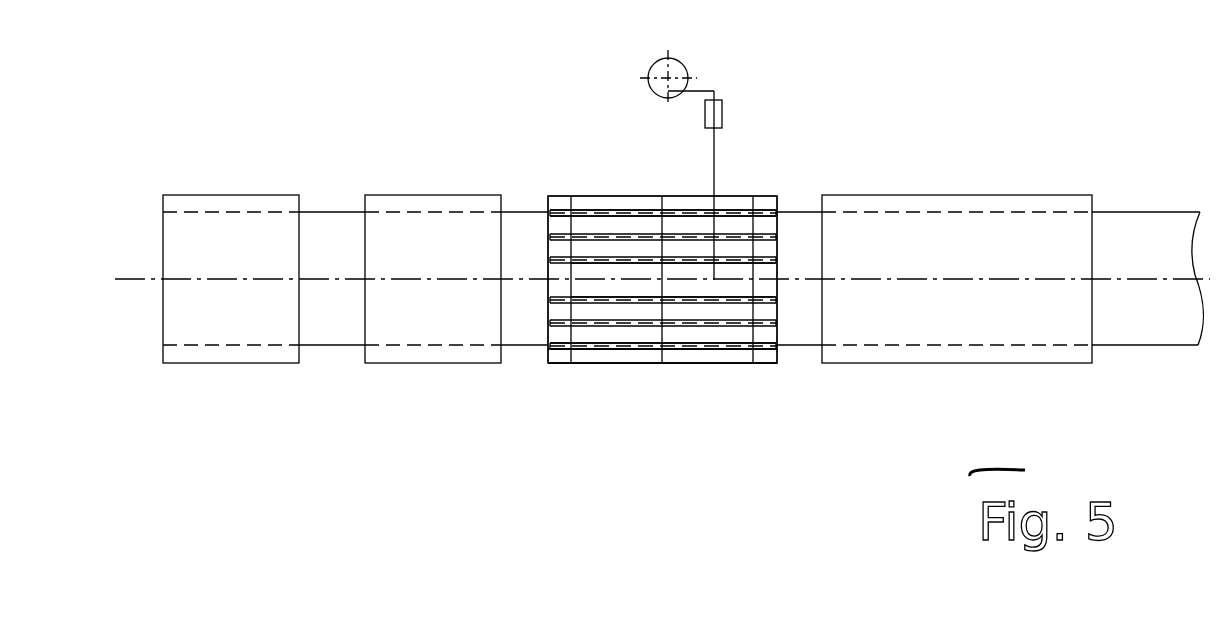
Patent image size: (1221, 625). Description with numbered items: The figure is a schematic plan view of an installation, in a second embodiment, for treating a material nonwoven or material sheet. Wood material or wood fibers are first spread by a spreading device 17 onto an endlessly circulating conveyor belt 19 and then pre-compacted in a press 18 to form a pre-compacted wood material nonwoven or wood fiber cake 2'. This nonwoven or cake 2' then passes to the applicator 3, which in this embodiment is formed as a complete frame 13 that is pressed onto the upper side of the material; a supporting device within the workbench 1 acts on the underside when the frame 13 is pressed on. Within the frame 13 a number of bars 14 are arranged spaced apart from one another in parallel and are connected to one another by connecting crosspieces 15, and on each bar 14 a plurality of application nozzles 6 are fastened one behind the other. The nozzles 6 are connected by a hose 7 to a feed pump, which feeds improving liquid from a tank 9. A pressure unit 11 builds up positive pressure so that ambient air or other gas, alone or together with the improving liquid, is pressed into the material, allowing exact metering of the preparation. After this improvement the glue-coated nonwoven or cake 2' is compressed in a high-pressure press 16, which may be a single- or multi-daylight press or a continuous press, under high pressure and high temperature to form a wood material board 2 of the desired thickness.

The workbench 1 is at (560, 189).
The wood material board 2 is at (1147, 278).
The pre-compacted wood material nonwoven 2' is at (517, 335).
The applicator 3 is at (778, 371).
The nozzle 6 is at (722, 212).
The hose 7 is at (714, 170).
The tank 9 is at (675, 66).
The pressure unit 11 is at (718, 110).
The frame 13 is at (670, 357).
The bars 14 is at (587, 212).
The connecting crosspieces 15 is at (750, 266).
The high-pressure press 16 is at (964, 203).
The spreading device 17 is at (222, 202).
The press 18 is at (439, 202).
The conveyor belt 19 is at (328, 330).